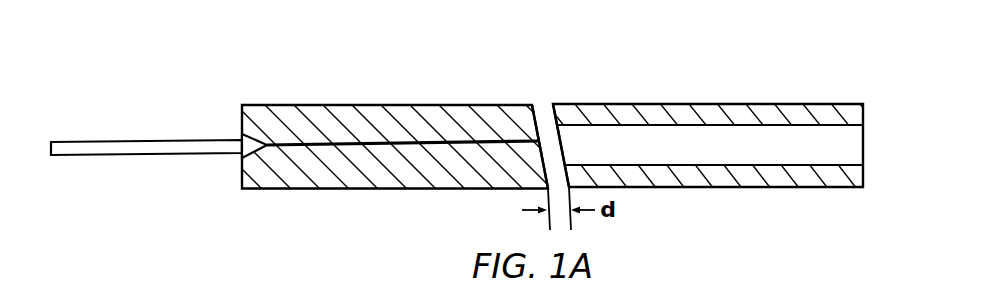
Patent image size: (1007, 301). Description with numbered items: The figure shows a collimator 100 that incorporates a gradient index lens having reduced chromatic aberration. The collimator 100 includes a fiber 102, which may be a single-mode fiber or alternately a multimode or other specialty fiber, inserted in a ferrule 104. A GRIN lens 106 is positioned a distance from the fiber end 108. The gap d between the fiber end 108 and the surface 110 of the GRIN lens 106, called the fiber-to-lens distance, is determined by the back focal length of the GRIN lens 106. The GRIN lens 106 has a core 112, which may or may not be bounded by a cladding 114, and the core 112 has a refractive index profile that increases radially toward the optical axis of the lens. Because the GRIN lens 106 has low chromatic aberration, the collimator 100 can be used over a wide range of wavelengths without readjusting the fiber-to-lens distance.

The collimator 100 is at (516, 84).
The fiber 102 is at (317, 145).
The ferrule 104 is at (405, 105).
The GRIN lens 106 is at (725, 104).
The fiber end 108 is at (555, 122).
The surface 110 is at (558, 141).
The core 112 is at (782, 152).
The cladding 114 is at (822, 110).